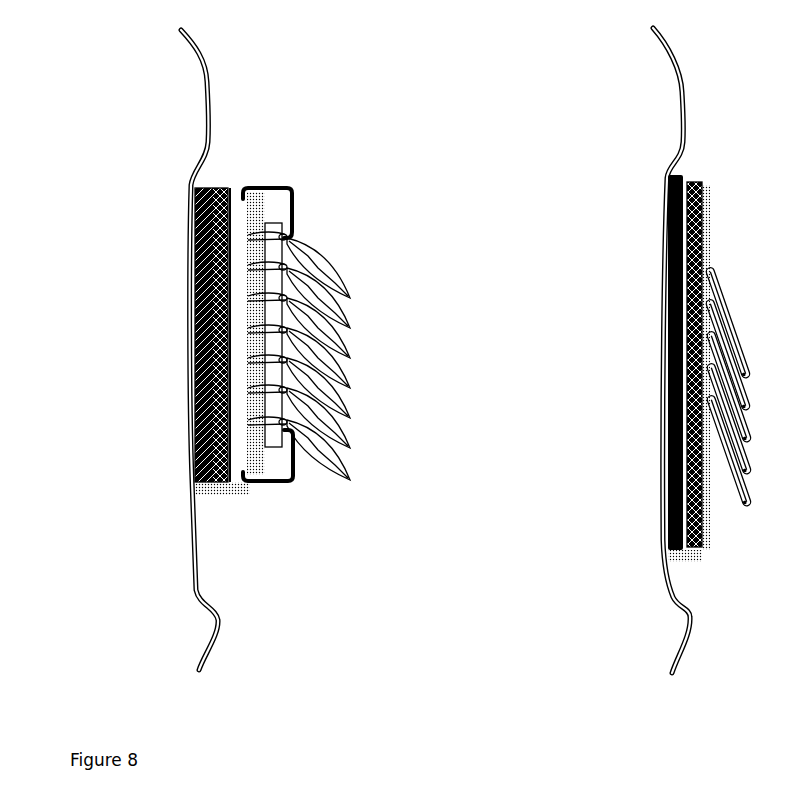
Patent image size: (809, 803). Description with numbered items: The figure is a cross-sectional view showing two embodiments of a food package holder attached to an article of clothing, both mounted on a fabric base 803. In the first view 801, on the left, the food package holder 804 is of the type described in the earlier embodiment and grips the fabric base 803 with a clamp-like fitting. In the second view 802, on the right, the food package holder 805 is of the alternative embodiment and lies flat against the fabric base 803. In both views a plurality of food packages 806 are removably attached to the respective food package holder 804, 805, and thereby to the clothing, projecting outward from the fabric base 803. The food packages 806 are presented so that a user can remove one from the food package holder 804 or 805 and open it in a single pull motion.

The first view 801 is at (213, 718).
The second view 802 is at (686, 730).
The fabric base 803 is at (638, 29).
The food package holder 804 is at (242, 161).
The food package holder 805 is at (720, 166).
The food packages 806 is at (368, 323).